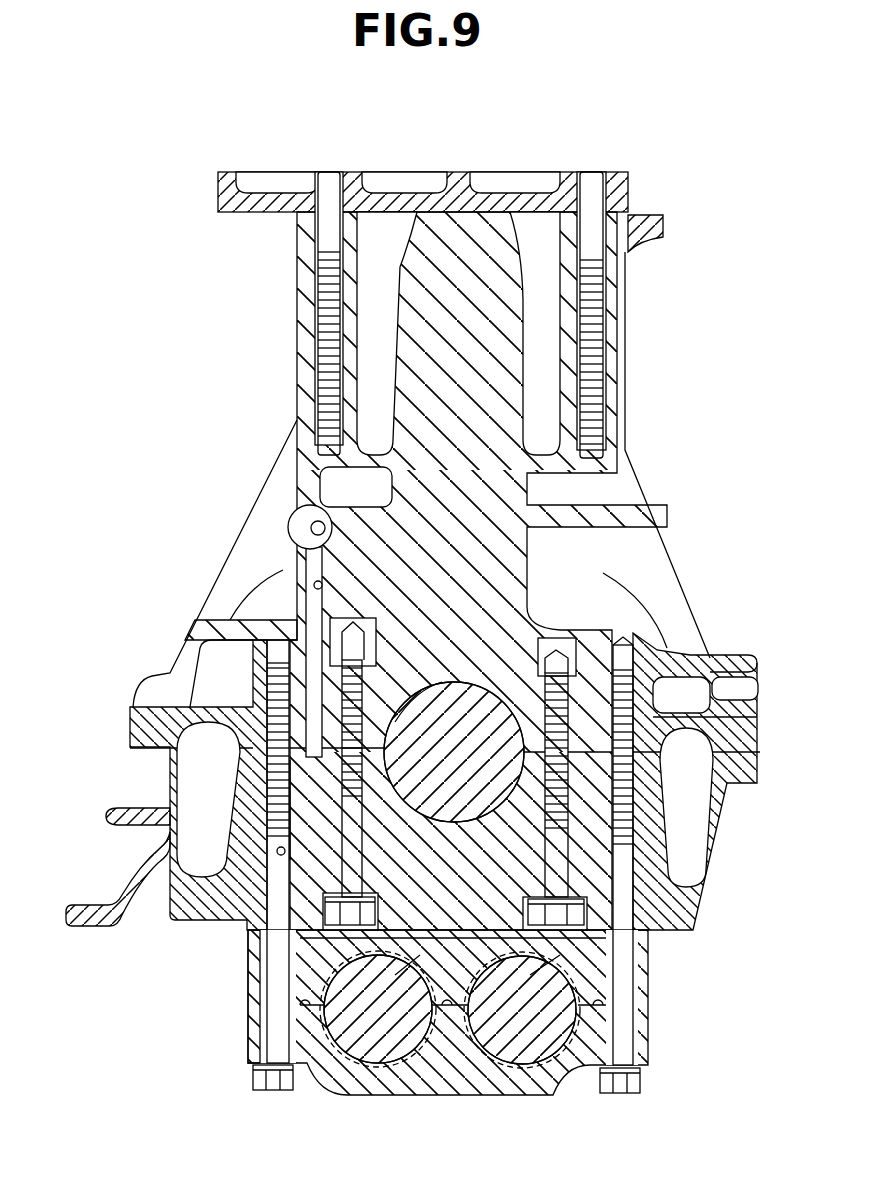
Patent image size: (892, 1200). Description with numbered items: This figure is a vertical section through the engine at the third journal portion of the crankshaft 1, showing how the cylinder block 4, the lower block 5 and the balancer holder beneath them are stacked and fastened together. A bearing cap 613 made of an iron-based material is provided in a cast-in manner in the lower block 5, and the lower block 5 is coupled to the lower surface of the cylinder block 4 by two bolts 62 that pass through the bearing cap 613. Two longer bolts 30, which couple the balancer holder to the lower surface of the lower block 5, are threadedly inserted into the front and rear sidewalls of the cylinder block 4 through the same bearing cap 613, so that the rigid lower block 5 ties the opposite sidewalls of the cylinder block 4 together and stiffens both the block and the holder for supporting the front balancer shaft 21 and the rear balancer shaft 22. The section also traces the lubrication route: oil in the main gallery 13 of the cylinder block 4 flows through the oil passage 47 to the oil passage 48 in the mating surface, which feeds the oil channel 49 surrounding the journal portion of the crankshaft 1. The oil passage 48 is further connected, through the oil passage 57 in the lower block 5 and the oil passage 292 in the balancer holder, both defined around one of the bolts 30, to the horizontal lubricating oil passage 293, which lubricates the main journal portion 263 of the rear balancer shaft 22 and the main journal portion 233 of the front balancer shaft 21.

The cylinder block 4 is at (250, 498).
The lower block 5 is at (122, 800).
The main gallery 13 is at (326, 529).
The oil passage 47 is at (322, 585).
The oil passage 48 is at (312, 810).
The oil channel 49 is at (443, 690).
The oil passage 57 is at (285, 853).
The crankshaft 1 is at (474, 763).
The bolts 62 is at (357, 668).
The bearing cap 613 is at (670, 867).
The lubricating oil passage 293 is at (318, 1045).
The oil passage 292 is at (270, 987).
The main journal portion 263 is at (405, 1024).
The main journal portion 233 is at (549, 1024).
The rear balancer shaft 22 is at (413, 985).
The front balancer shaft 21 is at (545, 985).
The bolts 30 is at (273, 1090).